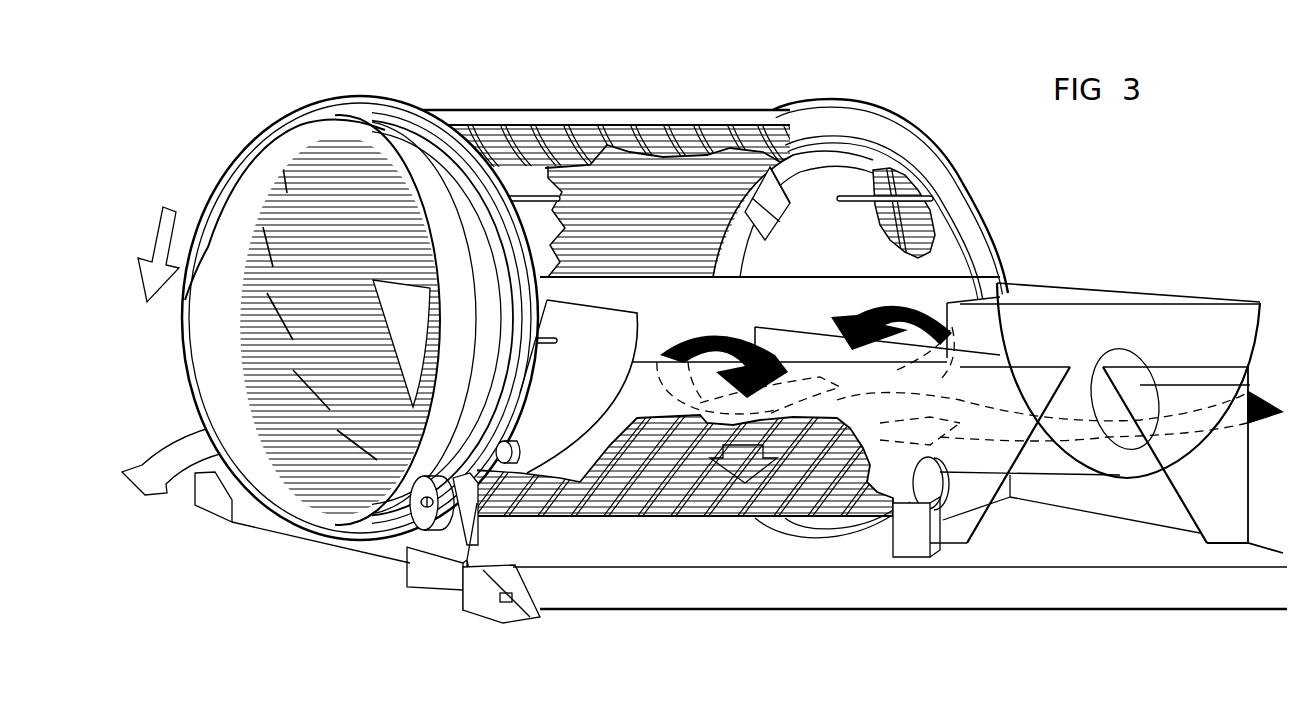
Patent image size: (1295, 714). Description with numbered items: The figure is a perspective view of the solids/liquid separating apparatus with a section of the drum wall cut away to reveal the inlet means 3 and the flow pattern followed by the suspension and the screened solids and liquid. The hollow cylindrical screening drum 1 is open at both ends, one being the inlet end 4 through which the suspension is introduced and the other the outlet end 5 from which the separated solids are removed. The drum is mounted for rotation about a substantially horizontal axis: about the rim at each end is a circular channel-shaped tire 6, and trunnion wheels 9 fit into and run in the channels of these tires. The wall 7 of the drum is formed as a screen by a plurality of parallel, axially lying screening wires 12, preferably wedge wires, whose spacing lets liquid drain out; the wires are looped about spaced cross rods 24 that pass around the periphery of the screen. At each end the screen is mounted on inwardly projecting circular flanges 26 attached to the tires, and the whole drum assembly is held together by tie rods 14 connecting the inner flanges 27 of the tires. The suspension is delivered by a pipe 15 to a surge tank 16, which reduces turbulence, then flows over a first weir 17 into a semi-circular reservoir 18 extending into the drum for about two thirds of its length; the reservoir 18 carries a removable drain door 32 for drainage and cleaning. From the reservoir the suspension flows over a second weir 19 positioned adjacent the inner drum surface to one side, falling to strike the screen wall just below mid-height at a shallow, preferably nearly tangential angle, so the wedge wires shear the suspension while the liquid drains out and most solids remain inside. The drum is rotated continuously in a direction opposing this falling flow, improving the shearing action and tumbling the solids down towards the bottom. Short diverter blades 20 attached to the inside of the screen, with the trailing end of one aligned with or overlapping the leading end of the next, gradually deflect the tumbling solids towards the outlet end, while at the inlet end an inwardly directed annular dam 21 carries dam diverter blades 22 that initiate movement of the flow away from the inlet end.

The screening drum 1 is at (579, 66).
The inlet means 3 is at (1150, 194).
The inlet end 4 is at (977, 135).
The outlet end 5 is at (360, 318).
The tire 6 is at (420, 140).
The wall 7 is at (684, 128).
The trunnion wheels 9 is at (430, 525).
The screening wires 12 is at (615, 500).
The tie rods 14 is at (508, 110).
The pipe 15 is at (1140, 357).
The surge tank 16 is at (1100, 290).
The first weir 17 is at (823, 330).
The reservoir 18 is at (568, 470).
The second weir 19 is at (650, 362).
The diverter blades 20 is at (267, 310).
The dam 21 is at (755, 257).
The dam diverter blades 22 is at (767, 220).
The cross rods 24 is at (655, 137).
The inwardly projecting circular flanges 26 is at (772, 170).
The inner flanges 27 is at (400, 112).
The drain door 32 is at (510, 463).